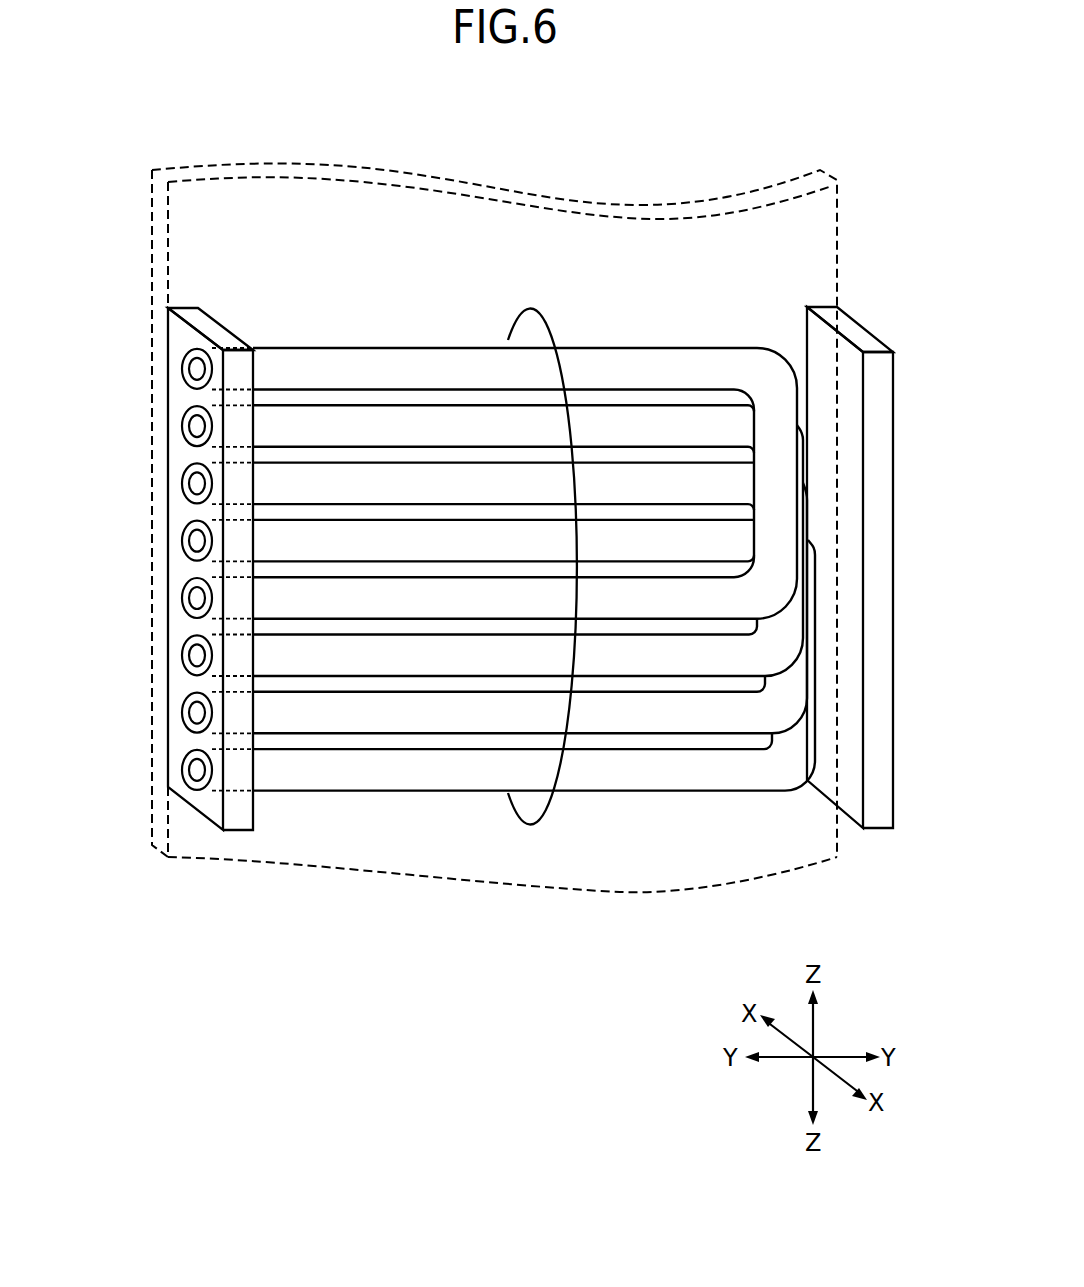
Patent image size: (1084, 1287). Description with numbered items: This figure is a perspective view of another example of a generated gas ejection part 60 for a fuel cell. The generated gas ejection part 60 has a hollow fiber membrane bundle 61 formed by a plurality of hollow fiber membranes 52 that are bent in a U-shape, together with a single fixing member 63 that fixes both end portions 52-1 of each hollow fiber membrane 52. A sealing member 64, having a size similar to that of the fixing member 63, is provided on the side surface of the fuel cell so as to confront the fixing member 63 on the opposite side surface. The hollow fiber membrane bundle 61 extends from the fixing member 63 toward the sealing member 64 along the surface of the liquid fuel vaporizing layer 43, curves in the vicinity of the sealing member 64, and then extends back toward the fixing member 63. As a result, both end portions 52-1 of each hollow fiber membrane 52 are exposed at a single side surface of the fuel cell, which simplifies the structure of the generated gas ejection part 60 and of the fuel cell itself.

The liquid fuel vaporizing layer 43 is at (837, 228).
The hollow fiber membrane 52 is at (429, 569).
The end portion 52-1 is at (174, 364).
The generated gas ejection part 60 is at (250, 246).
The hollow fiber membrane bundle 61 is at (529, 314).
The fixing member 63 is at (170, 764).
The sealing member 64 is at (880, 402).